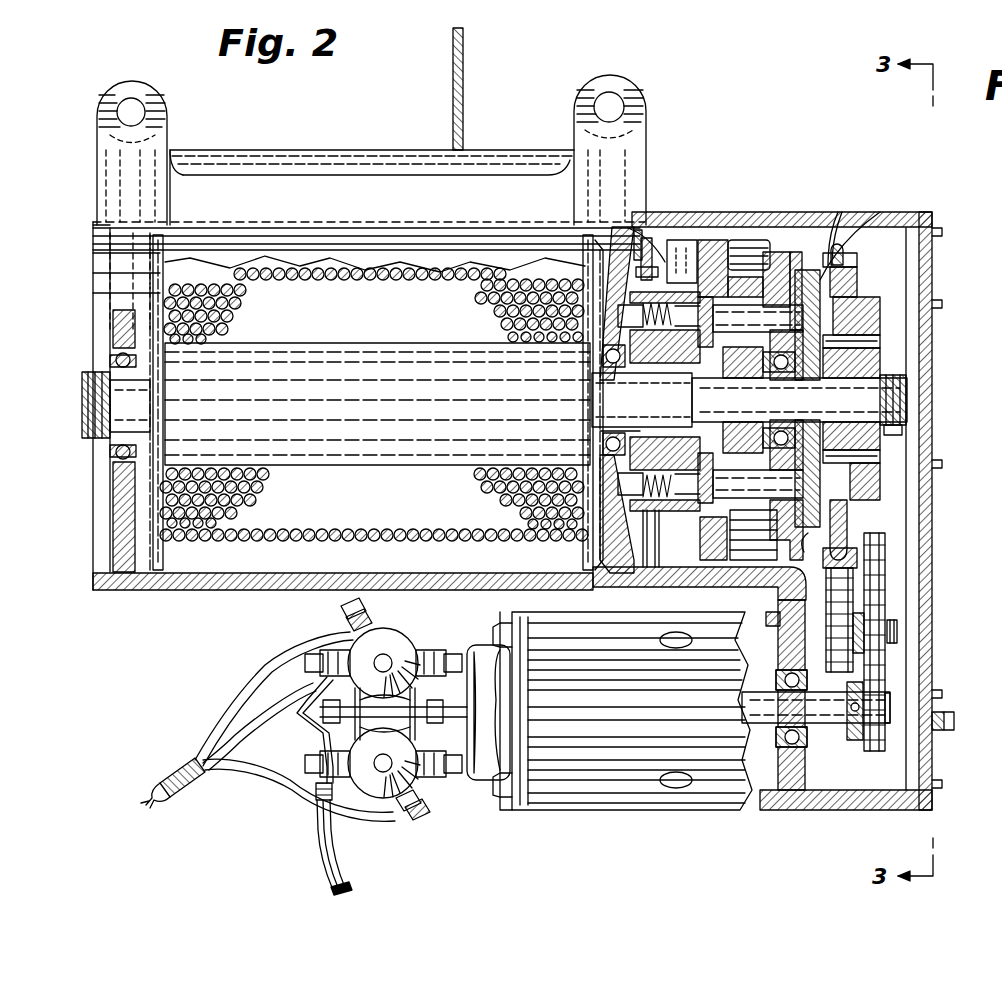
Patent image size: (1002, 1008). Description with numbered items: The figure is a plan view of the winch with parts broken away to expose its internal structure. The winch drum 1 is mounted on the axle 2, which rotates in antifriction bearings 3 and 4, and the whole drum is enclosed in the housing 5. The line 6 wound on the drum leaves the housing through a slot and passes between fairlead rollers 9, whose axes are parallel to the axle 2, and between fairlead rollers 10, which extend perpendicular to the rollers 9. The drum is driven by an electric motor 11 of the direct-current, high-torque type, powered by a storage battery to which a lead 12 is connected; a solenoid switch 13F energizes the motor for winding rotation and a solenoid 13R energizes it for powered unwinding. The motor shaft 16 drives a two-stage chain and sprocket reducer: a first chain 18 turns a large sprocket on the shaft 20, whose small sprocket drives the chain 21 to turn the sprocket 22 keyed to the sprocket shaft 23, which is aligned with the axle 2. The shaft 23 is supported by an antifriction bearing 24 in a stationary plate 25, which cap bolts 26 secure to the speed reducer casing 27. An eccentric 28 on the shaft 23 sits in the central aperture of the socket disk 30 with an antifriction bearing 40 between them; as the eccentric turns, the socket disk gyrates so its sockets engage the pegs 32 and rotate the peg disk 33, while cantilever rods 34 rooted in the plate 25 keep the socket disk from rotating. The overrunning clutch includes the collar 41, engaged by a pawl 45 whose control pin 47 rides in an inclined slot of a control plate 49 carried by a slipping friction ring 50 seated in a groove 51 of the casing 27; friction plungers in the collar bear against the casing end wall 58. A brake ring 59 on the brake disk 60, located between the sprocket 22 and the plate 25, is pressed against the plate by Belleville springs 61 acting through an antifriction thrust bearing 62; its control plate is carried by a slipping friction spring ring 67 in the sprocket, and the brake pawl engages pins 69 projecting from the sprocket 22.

The winch drum 1 is at (372, 385).
The axle 2 is at (655, 400).
The antifriction bearing 3 is at (105, 458).
The antifriction bearing 4 is at (600, 433).
The housing 5 is at (183, 590).
The line 6 is at (463, 78).
The fairlead rollers 9 is at (318, 158).
The fairlead rollers 10 is at (127, 95).
The electric motor 11 is at (598, 720).
The lead 12 is at (318, 860).
The solenoid switch 13F is at (388, 661).
The solenoid switch 13R is at (383, 775).
The motor shaft 16 is at (832, 715).
The chain 18 is at (886, 672).
The shaft 20 is at (898, 632).
The chain 21 is at (855, 590).
The sprocket 22 is at (885, 318).
The sprocket shaft 23 is at (906, 410).
The antifriction bearing 24 is at (880, 212).
The stationary plate 25 is at (838, 212).
The cap bolts 26 is at (831, 566).
The speed reducer casing 27 is at (778, 252).
The eccentric 28 is at (758, 401).
The socket disk 30 is at (752, 242).
The pegs 32 is at (745, 245).
The peg disk 33 is at (700, 553).
The cantilever rods 34 is at (770, 568).
The antifriction bearing 40 is at (758, 432).
The collar 41 is at (610, 440).
The pawl 45 is at (684, 242).
The control pin 47 is at (672, 240).
The control plate 49 is at (648, 238).
The slipping friction ring 50 is at (635, 545).
The groove 51 is at (621, 219).
The end wall 58 is at (600, 320).
The brake ring 59 is at (843, 250).
The brake disk 60 is at (817, 546).
The Belleville springs 61 is at (880, 352).
The antifriction thrust bearing 62 is at (880, 468).
The slipping friction spring ring 67 is at (848, 505).
The pins 69 is at (880, 330).